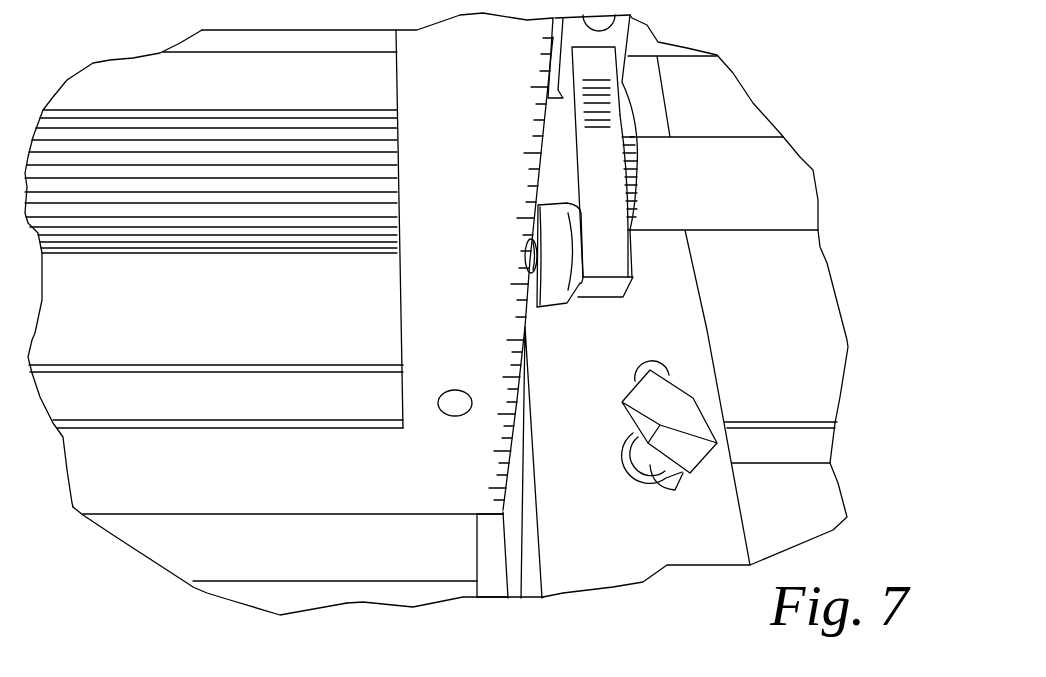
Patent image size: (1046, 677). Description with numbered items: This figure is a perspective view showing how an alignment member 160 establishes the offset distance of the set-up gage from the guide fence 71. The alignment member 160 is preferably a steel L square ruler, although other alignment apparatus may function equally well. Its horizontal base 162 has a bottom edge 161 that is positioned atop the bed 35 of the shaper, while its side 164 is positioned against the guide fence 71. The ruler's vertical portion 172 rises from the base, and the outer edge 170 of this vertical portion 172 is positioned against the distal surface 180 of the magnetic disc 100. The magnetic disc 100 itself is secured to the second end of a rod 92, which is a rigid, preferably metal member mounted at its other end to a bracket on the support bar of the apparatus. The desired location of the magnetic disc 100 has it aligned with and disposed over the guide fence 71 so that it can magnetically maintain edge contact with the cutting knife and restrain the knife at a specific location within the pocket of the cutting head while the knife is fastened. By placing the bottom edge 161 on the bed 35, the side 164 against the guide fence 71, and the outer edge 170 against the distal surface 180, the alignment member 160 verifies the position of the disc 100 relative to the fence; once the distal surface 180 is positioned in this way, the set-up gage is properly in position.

The rod 92 is at (580, 157).
The magnetic disc 100 is at (552, 297).
The distal surface 180 is at (523, 230).
The vertical portion 172 is at (427, 283).
The outer edge 170 is at (507, 425).
The side 164 is at (503, 493).
The horizontal base 162 is at (177, 490).
The bed 35 is at (240, 567).
The bottom edge 161 is at (320, 517).
The alignment member 160 is at (390, 498).
The guide fence 71 is at (512, 568).